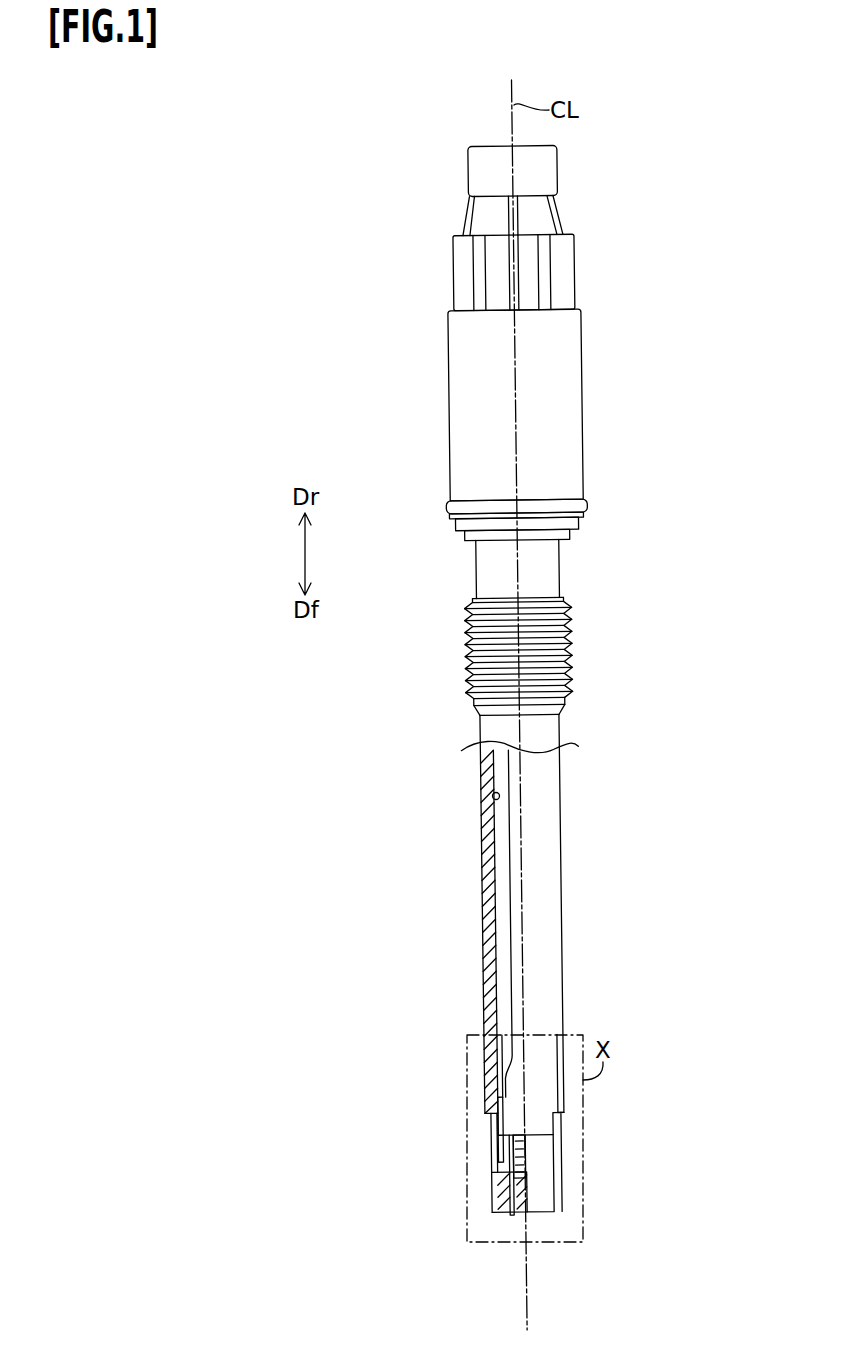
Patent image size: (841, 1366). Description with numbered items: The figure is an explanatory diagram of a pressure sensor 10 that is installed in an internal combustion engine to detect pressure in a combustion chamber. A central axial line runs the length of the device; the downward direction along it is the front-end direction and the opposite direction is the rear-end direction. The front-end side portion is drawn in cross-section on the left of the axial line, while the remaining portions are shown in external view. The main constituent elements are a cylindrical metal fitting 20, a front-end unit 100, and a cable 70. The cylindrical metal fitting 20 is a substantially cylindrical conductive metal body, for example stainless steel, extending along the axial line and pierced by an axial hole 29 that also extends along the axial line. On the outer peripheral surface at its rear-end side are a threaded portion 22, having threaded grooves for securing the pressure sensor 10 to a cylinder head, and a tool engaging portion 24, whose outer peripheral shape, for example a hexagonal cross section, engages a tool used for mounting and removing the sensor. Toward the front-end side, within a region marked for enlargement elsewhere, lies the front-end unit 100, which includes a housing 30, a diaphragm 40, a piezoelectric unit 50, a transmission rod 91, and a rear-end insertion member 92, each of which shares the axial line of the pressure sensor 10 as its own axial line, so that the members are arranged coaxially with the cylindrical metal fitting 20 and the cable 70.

The pressure sensor 10 is at (674, 327).
The cylindrical metal fitting 20 is at (483, 948).
The threaded portion 22 is at (467, 657).
The tool engaging portion 24 is at (459, 268).
The axial hole 29 is at (493, 795).
The housing 30 is at (492, 1180).
The diaphragm 40 is at (507, 1215).
The piezoelectric unit 50 is at (525, 1163).
The cable 70 is at (495, 891).
The transmission rod 91 is at (500, 1196).
The rear-end insertion member 92 is at (497, 1120).
The front-end unit 100 is at (634, 1095).